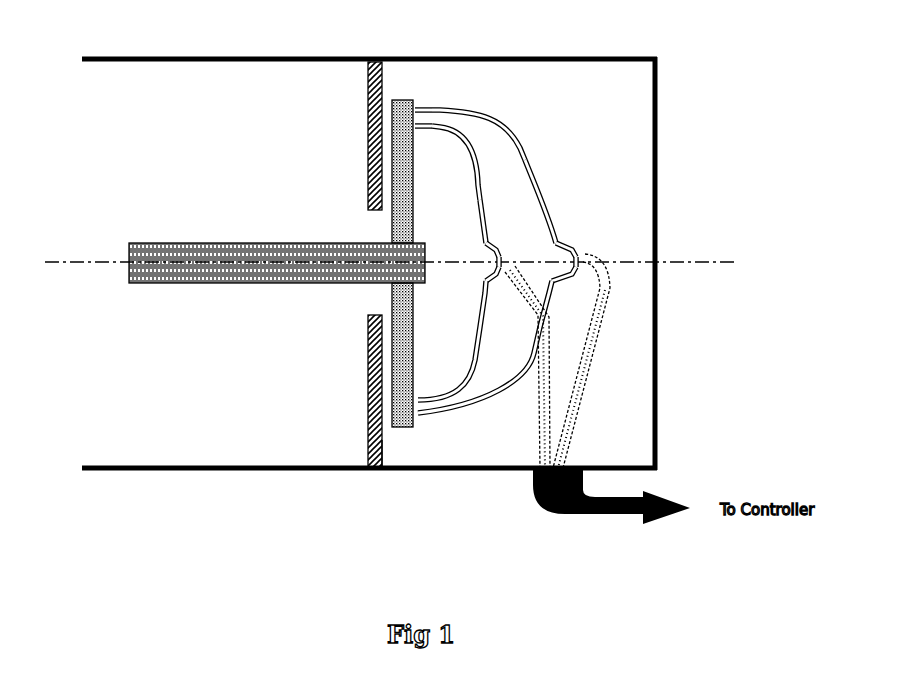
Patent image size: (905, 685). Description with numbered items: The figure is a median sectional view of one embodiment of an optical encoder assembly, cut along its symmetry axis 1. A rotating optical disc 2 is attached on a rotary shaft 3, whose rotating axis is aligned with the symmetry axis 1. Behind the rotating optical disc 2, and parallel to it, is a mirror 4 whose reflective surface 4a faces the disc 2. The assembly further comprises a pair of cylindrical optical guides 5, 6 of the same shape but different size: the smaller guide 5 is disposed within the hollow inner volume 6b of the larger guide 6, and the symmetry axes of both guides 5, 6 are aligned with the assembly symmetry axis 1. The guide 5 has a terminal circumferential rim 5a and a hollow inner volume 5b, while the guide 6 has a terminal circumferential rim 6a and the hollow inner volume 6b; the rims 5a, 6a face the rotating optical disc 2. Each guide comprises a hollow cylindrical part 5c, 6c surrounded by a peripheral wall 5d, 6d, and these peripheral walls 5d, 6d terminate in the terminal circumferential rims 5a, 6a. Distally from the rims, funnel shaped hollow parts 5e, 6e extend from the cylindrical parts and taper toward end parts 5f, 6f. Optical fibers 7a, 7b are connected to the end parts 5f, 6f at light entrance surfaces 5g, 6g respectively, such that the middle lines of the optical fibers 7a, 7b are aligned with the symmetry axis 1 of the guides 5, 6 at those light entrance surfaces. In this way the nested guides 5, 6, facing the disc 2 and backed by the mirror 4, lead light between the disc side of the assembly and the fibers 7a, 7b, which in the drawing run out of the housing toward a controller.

The symmetry axis 1 is at (84, 251).
The rotating optical disc 2 is at (391, 314).
The rotary shaft 3 is at (183, 269).
The mirror 4 is at (364, 153).
The reflective surface 4a is at (385, 443).
The cylindrical optical guide 5 is at (519, 319).
The terminal circumferential rim 5a is at (412, 117).
The hollow inner volume 5b is at (451, 166).
The hollow cylindrical part 5c is at (452, 404).
The peripheral wall 5d is at (468, 139).
The funnel shaped hollow part 5e is at (490, 244).
The end part 5f is at (511, 273).
The light entrance surface 5g is at (506, 265).
The cylindrical optical guide 6 is at (549, 310).
The terminal circumferential rim 6a is at (412, 101).
The hollow inner volume 6b is at (506, 148).
The hollow cylindrical part 6c is at (482, 419).
The peripheral wall 6d is at (503, 120).
The funnel shaped hollow part 6e is at (569, 245).
The end part 6f is at (581, 254).
The light entrance surface 6g is at (588, 261).
The optical fiber 7a is at (578, 440).
The optical fiber 7b is at (561, 409).